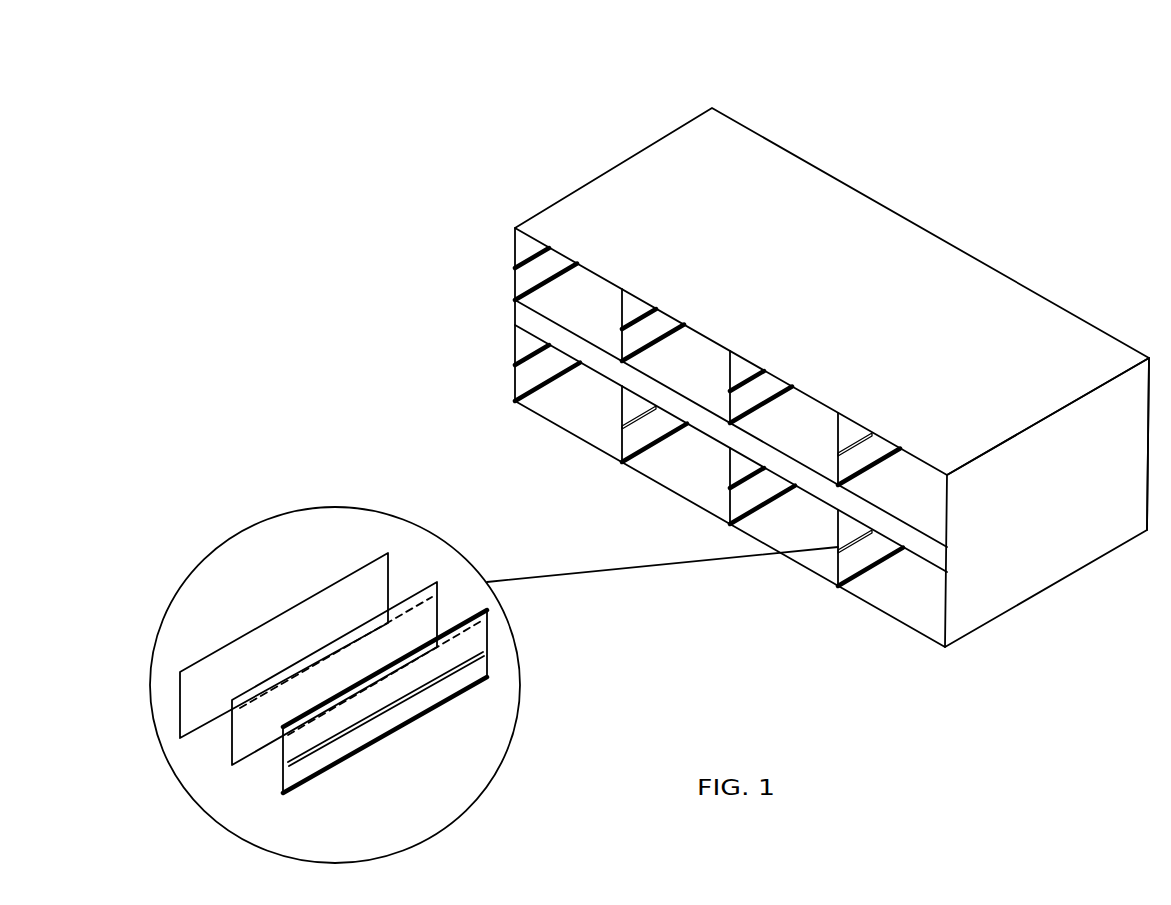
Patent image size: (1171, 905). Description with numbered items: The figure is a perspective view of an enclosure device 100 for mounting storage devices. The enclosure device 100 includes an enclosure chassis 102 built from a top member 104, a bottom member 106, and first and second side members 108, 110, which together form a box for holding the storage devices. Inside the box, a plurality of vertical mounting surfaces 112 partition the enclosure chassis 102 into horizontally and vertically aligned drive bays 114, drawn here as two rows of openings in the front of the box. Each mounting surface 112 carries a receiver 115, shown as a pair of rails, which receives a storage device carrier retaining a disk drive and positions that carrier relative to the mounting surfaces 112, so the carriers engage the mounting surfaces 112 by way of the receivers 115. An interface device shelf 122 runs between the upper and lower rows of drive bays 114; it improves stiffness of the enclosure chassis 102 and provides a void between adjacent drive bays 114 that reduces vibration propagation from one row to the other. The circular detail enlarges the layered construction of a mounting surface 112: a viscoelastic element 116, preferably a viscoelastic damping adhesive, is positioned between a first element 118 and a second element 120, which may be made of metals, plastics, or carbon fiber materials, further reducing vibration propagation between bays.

The enclosure device 100 is at (953, 148).
The enclosure chassis 102 is at (1146, 330).
The top member 104 is at (750, 240).
The bottom member 106 is at (892, 622).
The first side member 108 is at (1047, 553).
The second side member 110 is at (623, 160).
The vertical mounting surface 112 is at (210, 552).
The drive bay 114 is at (573, 287).
The receiver 115 is at (515, 268).
The viscoelastic element 116 is at (402, 600).
The first element 118 is at (453, 703).
The second element 120 is at (318, 600).
The interface device shelf 122 is at (935, 555).